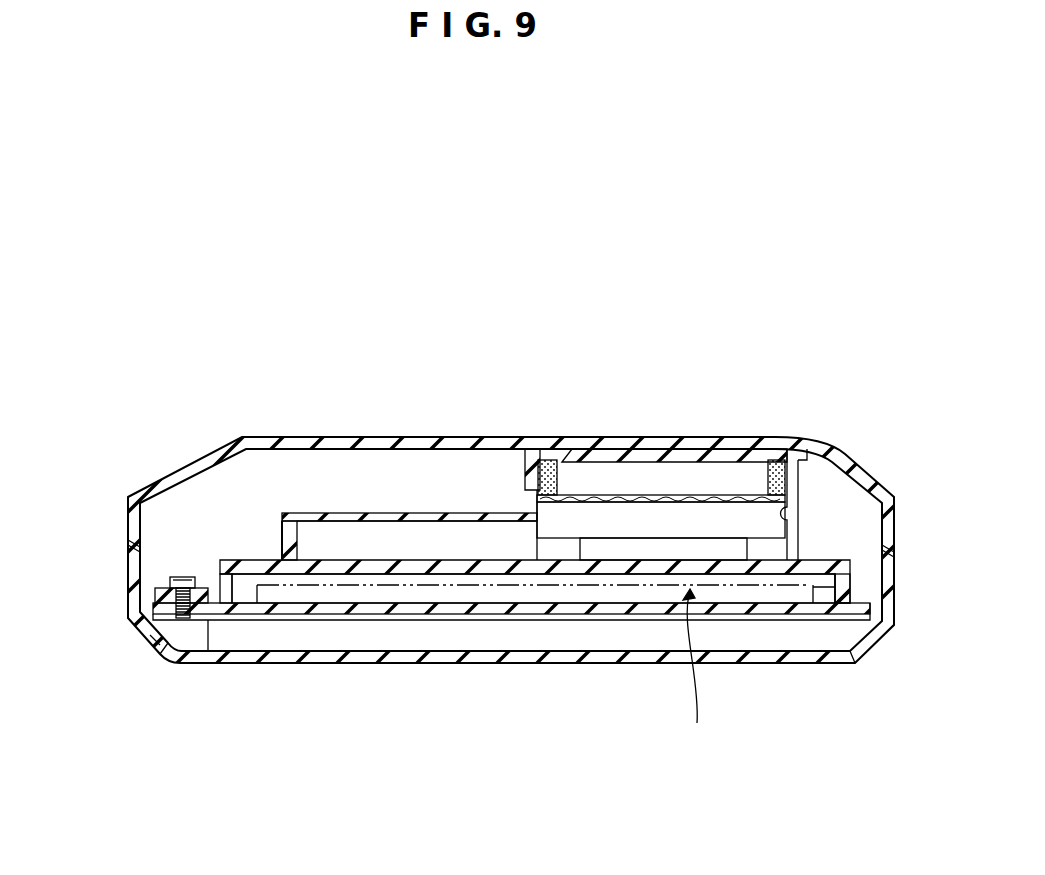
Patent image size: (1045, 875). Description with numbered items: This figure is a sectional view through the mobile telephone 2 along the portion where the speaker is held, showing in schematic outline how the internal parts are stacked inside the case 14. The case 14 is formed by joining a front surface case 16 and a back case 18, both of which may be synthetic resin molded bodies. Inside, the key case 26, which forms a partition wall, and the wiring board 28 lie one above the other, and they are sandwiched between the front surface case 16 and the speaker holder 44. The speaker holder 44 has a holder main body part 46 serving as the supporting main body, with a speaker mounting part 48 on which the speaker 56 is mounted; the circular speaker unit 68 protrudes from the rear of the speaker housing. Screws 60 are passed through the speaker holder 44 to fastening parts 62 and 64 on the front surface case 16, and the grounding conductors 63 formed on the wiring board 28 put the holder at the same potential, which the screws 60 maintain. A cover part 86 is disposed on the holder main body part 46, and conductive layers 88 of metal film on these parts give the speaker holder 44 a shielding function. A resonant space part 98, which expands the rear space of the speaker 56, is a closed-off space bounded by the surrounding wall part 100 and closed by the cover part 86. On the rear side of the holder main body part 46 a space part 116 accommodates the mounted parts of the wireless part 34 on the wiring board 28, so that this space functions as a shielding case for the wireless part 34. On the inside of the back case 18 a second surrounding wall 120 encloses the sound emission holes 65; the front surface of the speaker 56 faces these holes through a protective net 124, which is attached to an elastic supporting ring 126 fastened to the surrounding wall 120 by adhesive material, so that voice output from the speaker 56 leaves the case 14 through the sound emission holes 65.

The mobile telephone 2 is at (929, 645).
The case 14 is at (79, 485).
The front surface case 16 is at (128, 576).
The back case 18 is at (128, 509).
The key case 26 is at (342, 621).
The wiring board 28 is at (445, 616).
The wireless part 34 is at (815, 553).
The speaker holder 44 is at (535, 470).
The holder main body part 46 is at (468, 560).
The speaker mounting part 48 is at (797, 510).
The speaker 56 is at (648, 515).
The screw 60 is at (182, 577).
The fastening part 62 is at (812, 638).
The grounding conductor 63 is at (155, 650).
The fastening part 64 is at (213, 640).
The sound emission hole 65 is at (710, 456).
The speaker unit 68 is at (622, 548).
The cover part 86 is at (495, 383).
The conductive layer 88 is at (247, 556).
The resonant space part 98 is at (332, 533).
The surrounding wall part 100 is at (286, 530).
The space part 116 is at (700, 671).
The second surrounding wall 120 is at (802, 463).
The protective net 124 is at (610, 480).
The supporting ring 126 is at (757, 478).